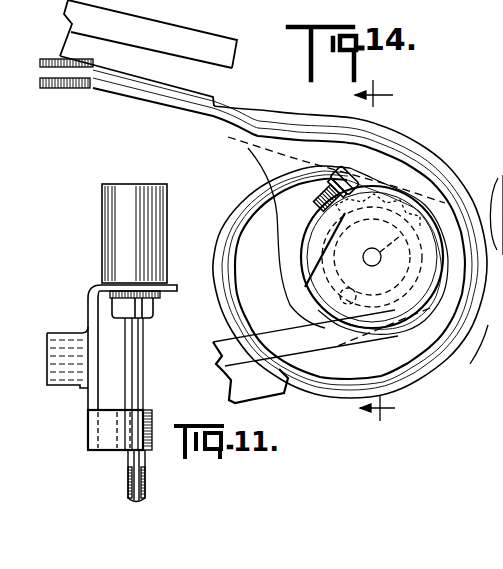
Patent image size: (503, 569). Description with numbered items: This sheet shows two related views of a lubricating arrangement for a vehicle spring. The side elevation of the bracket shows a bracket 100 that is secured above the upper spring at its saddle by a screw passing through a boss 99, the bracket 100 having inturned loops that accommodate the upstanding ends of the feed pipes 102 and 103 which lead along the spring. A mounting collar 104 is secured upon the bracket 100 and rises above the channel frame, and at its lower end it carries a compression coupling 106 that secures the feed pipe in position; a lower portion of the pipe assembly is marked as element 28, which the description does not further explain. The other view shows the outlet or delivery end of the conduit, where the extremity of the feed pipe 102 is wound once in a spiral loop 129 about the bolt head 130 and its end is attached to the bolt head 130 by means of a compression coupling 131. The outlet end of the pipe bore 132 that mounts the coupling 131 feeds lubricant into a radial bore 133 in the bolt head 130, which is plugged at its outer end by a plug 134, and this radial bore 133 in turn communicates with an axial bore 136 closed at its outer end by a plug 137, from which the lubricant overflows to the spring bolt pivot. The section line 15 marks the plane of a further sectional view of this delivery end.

In FIG. 14, the section line 15- 15 is at (382, 254).
In FIG. 14, the feed pipe 102 is at (175, 107).
In FIG. 14, the spiral loop 129 is at (423, 365).
In FIG. 14, the bolt head 130 is at (335, 262).
In FIG. 14, the compression coupling 131 is at (322, 208).
In FIG. 14, the pipe bore 132 is at (397, 205).
In FIG. 14, the radial bore 133 is at (393, 250).
In FIG. 14, the plug 134 is at (428, 212).
In FIG. 14, the axial bore 136 is at (470, 364).
In FIG. 14, the plug 137 is at (490, 207).
In FIG. 11, the boss 99 is at (63, 331).
In FIG. 11, the bracket 100 is at (88, 403).
In FIG. 11, the feed pipe 103 is at (127, 482).
In FIG. 11, the mounting collar 104 is at (113, 229).
In FIG. 11, the compression coupling 106 is at (153, 313).
In FIG. 11, the serrated strip 28 is at (151, 417).